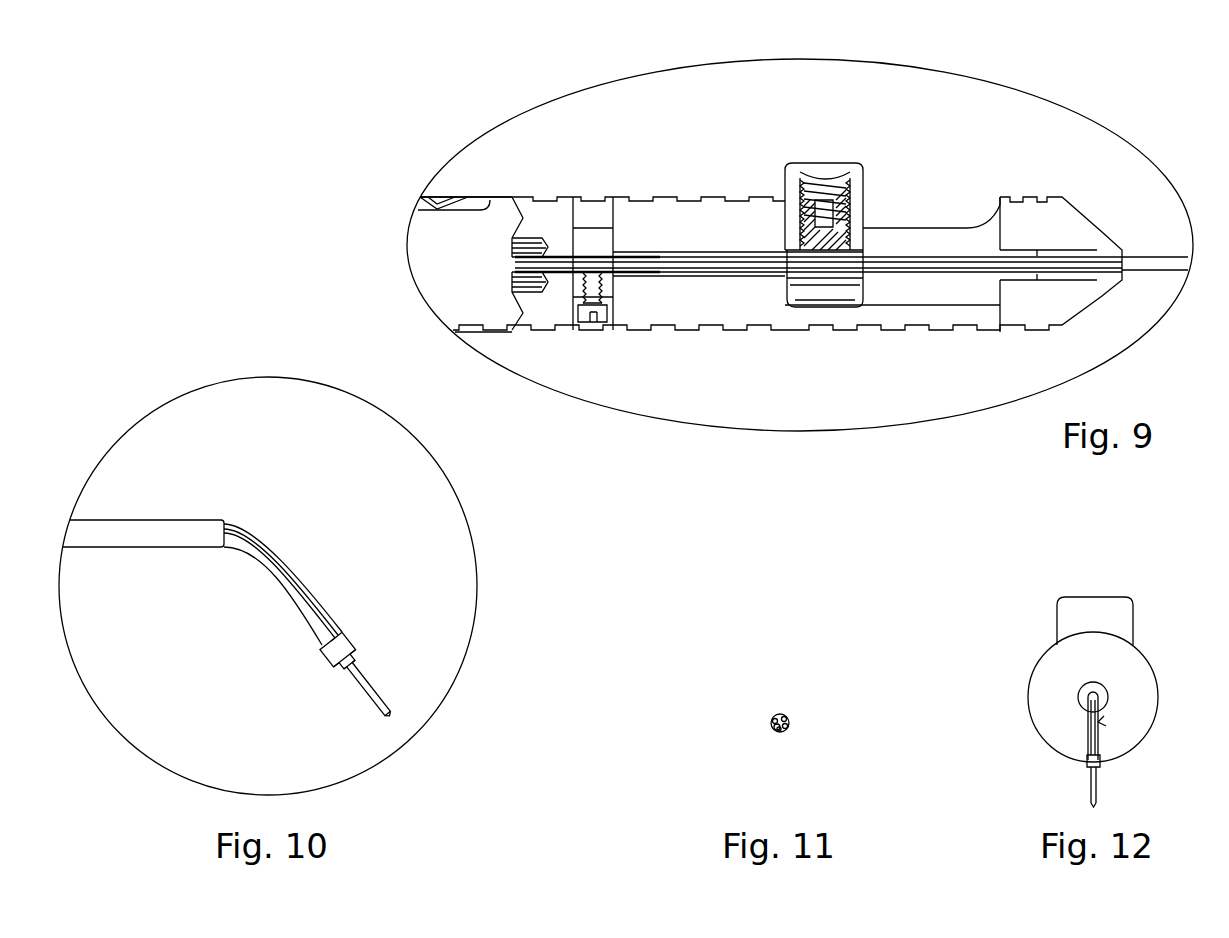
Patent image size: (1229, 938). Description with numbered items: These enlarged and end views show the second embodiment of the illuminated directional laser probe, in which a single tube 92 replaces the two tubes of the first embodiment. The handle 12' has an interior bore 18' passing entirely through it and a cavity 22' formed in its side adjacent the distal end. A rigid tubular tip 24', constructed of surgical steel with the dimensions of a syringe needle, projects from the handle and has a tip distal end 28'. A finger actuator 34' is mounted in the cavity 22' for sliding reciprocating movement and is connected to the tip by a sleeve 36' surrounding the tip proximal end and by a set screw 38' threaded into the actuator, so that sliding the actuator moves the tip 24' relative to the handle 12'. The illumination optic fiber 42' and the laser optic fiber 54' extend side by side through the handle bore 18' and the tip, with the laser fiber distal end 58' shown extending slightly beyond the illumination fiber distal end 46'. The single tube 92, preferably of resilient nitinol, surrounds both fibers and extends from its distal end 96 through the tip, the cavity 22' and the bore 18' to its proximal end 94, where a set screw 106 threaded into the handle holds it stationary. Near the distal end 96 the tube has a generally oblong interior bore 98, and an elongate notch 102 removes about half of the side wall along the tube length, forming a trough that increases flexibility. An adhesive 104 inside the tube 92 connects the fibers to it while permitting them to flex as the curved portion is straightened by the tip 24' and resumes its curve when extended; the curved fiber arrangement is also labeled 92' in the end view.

In FIG. 12, the handle 12' is at (1063, 697).
In FIG. 9, the handle interior bore 18' is at (770, 176).
In FIG. 9, the handle cavity 22' is at (818, 146).
In FIG. 9, the rigid tubular tip 24' is at (1161, 206).
In FIG. 10, the rigid tubular tip 24' is at (143, 463).
In FIG. 12, the rigid tubular tip 24' is at (1059, 656).
In FIG. 10, the tip distal end 28' is at (273, 482).
In FIG. 12, the tip distal end 28' is at (1140, 694).
In FIG. 9, the finger actuator 34' is at (844, 164).
In FIG. 12, the finger actuator 34' is at (1095, 595).
In FIG. 9, the sleeve 36' is at (819, 369).
In FIG. 9, the set screw 38' is at (826, 135).
In FIG. 10, the illumination optic fiber 42' is at (233, 721).
In FIG. 10, the illumination optic fiber distal end 46' is at (370, 738).
In FIG. 11, the illumination optic fiber distal end 46' is at (735, 744).
In FIG. 10, the laser optic fiber 54' is at (438, 615).
In FIG. 12, the laser optic fiber 54' is at (1138, 785).
In FIG. 10, the laser optic fiber distal end 58' is at (433, 743).
In FIG. 11, the laser optic fiber distal end 58' is at (820, 701).
In FIG. 12, the laser optic fiber distal end 58' is at (1067, 789).
In FIG. 9, the single tube 92 is at (818, 388).
In FIG. 10, the single tube 92 is at (350, 525).
In FIG. 11, the single tube 92 is at (773, 690).
In FIG. 12, the inner rod 92' is at (1042, 736).
In FIG. 9, the tube proximal end 94 is at (515, 264).
In FIG. 10, the tube distal end 96 is at (348, 660).
In FIG. 11, the tube distal end 96 is at (790, 727).
In FIG. 12, the tube distal end 96 is at (1100, 760).
In FIG. 9, the interior bore 98 is at (757, 263).
In FIG. 11, the interior bore 98 is at (772, 720).
In FIG. 12, the elongate notch 102 is at (1099, 722).
In FIG. 10, the adhesive 104 is at (290, 588).
In FIG. 11, the adhesive 104 is at (783, 732).
In FIG. 12, the adhesive 104 is at (1089, 720).
In FIG. 9, the set screw 106 is at (593, 323).